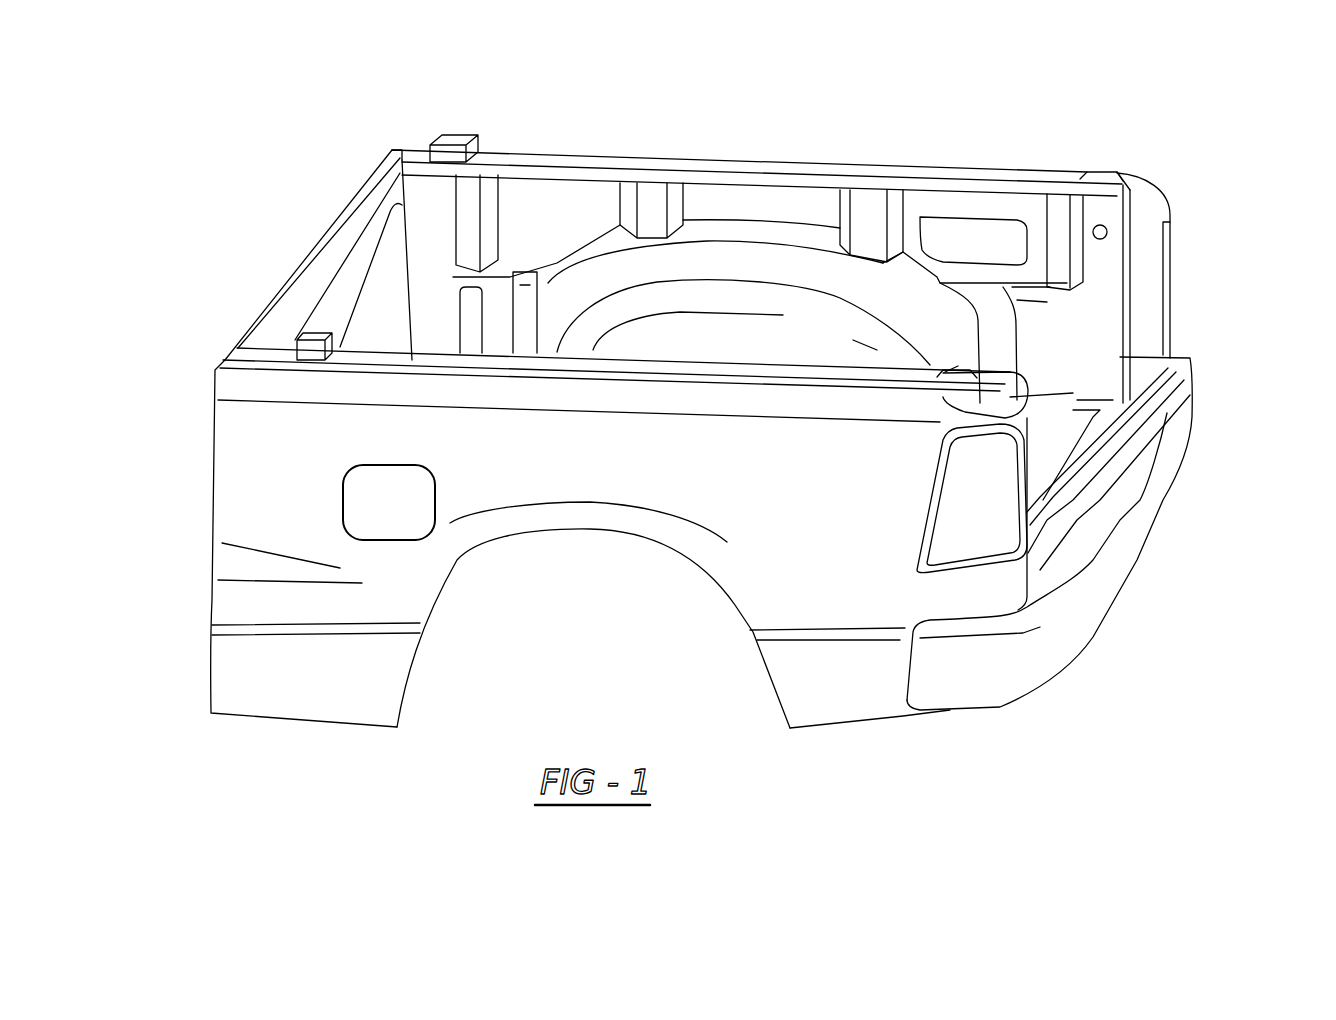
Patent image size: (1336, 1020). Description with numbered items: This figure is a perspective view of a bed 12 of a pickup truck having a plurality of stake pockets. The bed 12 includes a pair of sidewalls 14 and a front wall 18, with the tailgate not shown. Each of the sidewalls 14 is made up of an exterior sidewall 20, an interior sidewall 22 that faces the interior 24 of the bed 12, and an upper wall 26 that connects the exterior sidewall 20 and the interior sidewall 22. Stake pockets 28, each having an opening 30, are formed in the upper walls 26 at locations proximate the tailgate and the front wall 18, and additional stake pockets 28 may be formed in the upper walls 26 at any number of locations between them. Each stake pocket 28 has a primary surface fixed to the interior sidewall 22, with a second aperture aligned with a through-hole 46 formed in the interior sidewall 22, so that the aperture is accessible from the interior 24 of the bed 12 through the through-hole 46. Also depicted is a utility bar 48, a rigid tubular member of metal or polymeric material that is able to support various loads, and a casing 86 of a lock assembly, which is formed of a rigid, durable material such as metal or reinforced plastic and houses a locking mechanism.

The bed 12 is at (262, 240).
The sidewalls 14 is at (923, 167).
The front wall 18 is at (347, 223).
The exterior sidewall 20 is at (810, 501).
The interior sidewall 22 is at (847, 342).
The interior 24 is at (1070, 436).
The upper wall 26 is at (755, 167).
The stake pockets 28 is at (1118, 172).
The opening 30 is at (1099, 177).
The through-hole 46 is at (1106, 227).
The utility bar 48 is at (423, 209).
The casing 86 is at (455, 133).